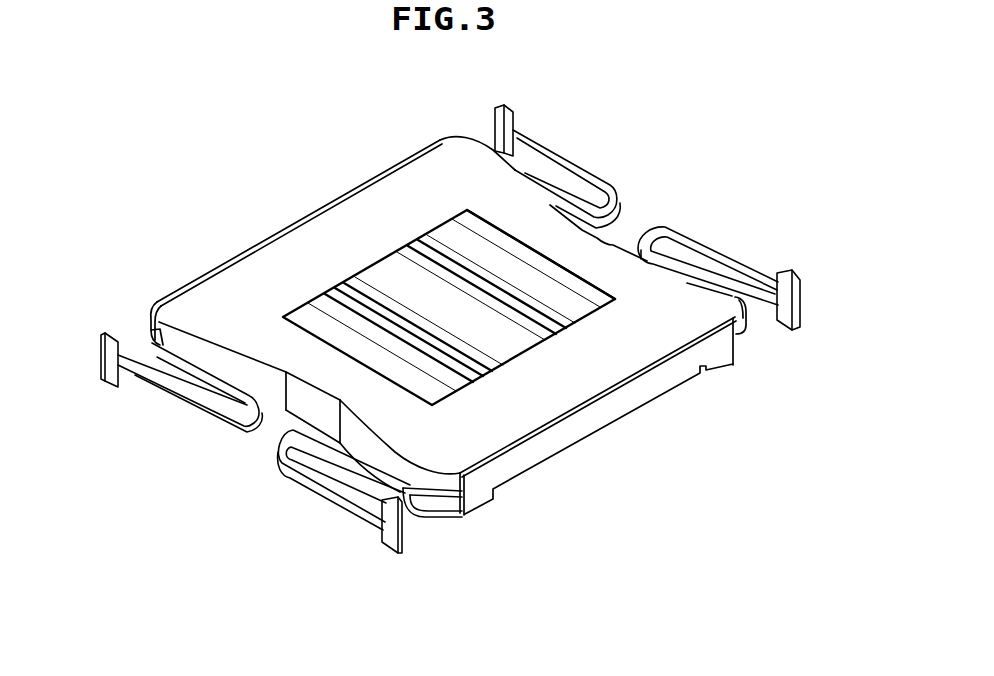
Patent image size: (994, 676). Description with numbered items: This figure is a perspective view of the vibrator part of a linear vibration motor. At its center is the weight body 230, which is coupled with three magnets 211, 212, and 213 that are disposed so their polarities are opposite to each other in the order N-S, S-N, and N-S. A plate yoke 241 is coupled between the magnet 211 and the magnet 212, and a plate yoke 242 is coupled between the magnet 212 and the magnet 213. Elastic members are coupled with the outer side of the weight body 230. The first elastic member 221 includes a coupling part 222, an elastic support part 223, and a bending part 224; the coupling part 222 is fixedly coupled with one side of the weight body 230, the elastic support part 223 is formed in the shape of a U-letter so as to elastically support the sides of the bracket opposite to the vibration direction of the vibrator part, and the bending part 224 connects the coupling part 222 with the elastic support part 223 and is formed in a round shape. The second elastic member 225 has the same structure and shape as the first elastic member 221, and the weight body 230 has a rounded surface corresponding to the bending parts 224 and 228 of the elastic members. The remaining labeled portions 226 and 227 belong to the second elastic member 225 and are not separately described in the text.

The magnet 211 is at (293, 303).
The magnet 212 is at (380, 272).
The magnet 213 is at (457, 227).
The plate yoke 241 is at (343, 290).
The plate yoke 242 is at (413, 247).
The first elastic member 221 is at (752, 246).
The coupling part 222 is at (607, 407).
The elastic support part 223 is at (333, 493).
The bending part 224 is at (436, 502).
The second elastic member 225 is at (590, 147).
The rim of holder plate 226 is at (183, 278).
The fourth elastic clip 227 is at (172, 394).
The bending part 228 is at (157, 330).
The weight body 230 is at (618, 232).